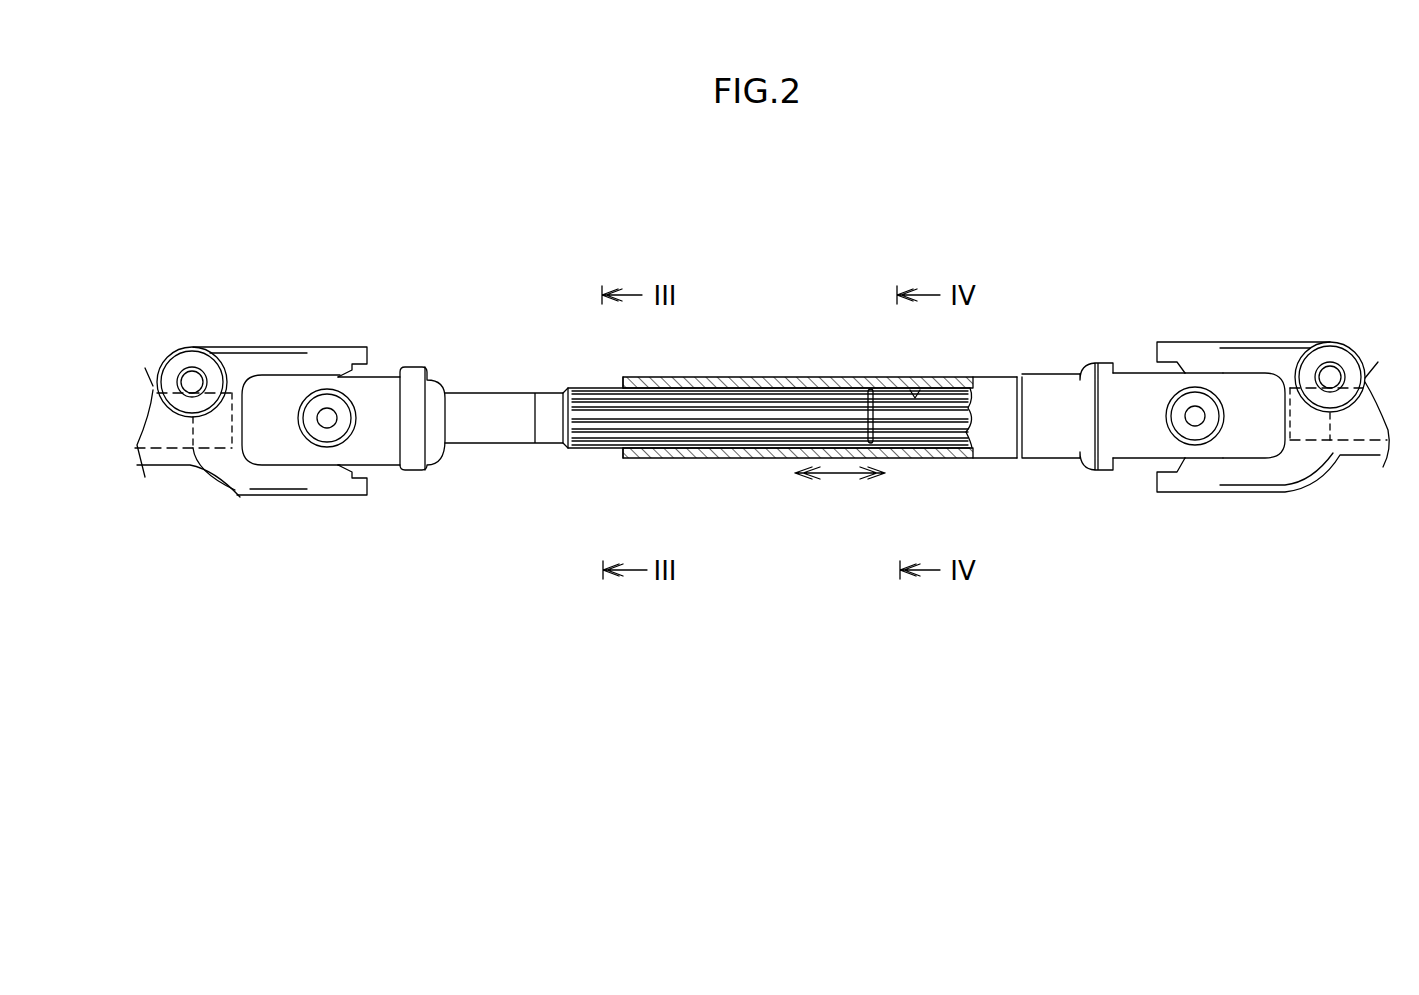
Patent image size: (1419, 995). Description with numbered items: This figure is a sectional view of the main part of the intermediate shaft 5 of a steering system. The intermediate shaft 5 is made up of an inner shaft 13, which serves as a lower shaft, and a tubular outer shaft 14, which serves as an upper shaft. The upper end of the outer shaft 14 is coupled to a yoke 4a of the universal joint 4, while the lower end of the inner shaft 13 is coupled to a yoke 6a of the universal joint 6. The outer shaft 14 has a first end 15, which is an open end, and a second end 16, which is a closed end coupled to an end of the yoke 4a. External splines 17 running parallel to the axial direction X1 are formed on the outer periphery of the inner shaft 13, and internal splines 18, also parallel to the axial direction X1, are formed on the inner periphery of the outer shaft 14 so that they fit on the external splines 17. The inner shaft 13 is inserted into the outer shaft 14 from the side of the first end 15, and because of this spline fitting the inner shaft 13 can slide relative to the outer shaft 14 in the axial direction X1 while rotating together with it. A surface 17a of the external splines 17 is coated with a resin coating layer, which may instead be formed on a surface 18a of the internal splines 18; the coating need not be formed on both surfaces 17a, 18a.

The universal joint 4 is at (1271, 332).
The yoke 4a is at (1150, 438).
The intermediate shaft 5 is at (722, 343).
The universal joint 6 is at (269, 331).
The yoke 6a is at (387, 452).
The inner shaft 13 is at (517, 380).
The outer shaft 14 is at (774, 370).
The first end 15 is at (636, 378).
The second end 16 is at (1043, 378).
The external splines 17 is at (680, 437).
The surface of the external splines 17a is at (585, 448).
The internal splines 18 is at (918, 430).
The surface of the internal splines 18a is at (915, 398).
The axial direction X1 is at (840, 475).